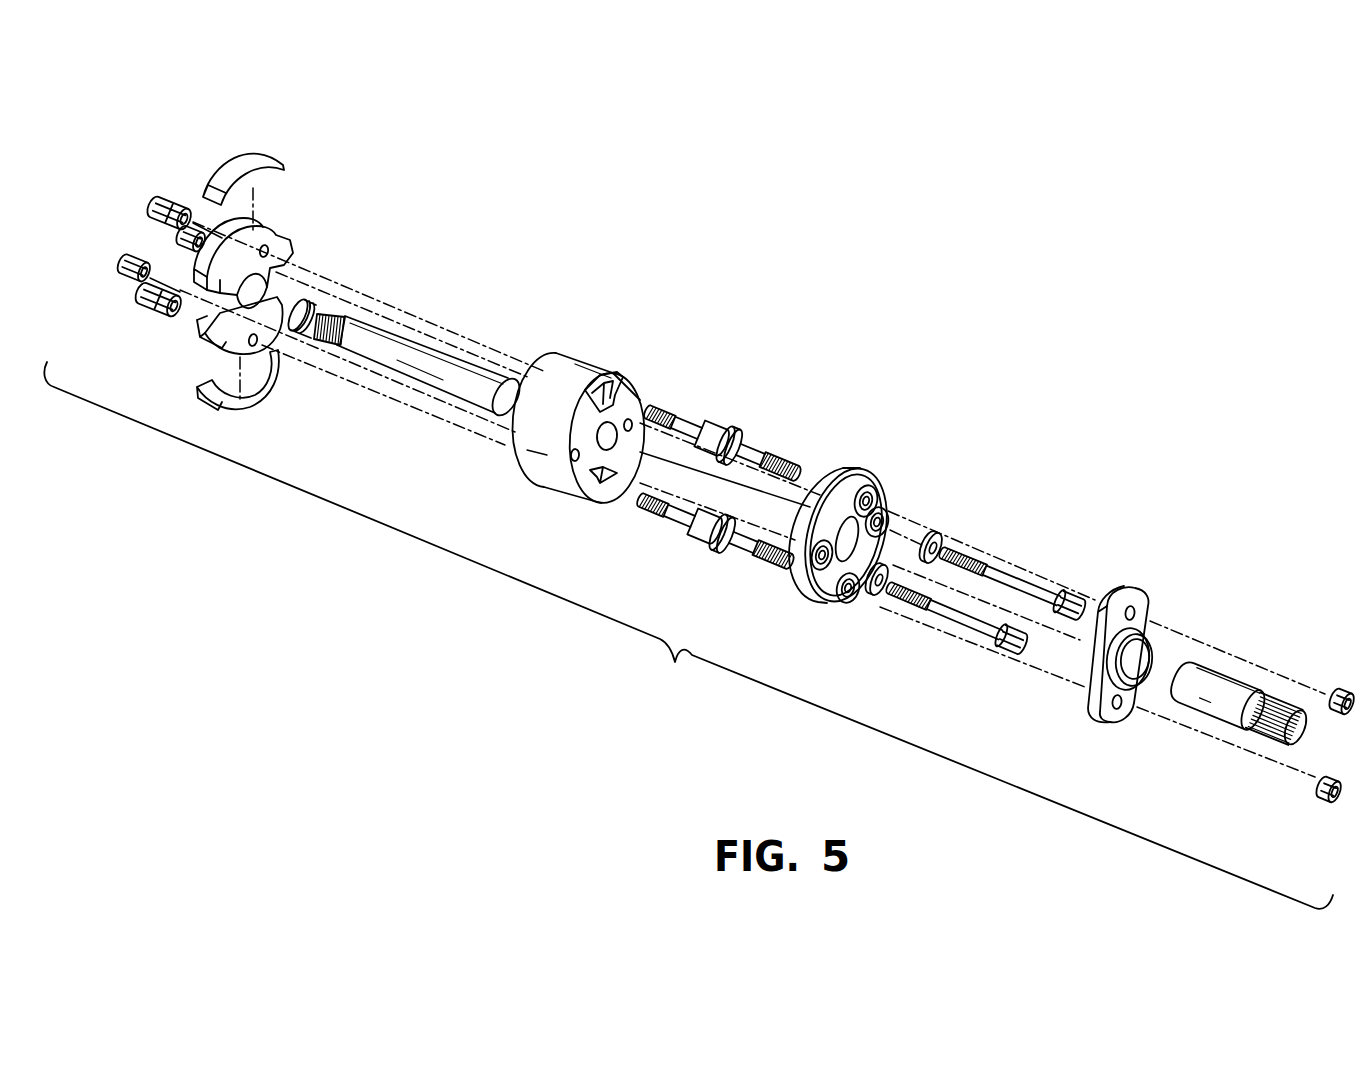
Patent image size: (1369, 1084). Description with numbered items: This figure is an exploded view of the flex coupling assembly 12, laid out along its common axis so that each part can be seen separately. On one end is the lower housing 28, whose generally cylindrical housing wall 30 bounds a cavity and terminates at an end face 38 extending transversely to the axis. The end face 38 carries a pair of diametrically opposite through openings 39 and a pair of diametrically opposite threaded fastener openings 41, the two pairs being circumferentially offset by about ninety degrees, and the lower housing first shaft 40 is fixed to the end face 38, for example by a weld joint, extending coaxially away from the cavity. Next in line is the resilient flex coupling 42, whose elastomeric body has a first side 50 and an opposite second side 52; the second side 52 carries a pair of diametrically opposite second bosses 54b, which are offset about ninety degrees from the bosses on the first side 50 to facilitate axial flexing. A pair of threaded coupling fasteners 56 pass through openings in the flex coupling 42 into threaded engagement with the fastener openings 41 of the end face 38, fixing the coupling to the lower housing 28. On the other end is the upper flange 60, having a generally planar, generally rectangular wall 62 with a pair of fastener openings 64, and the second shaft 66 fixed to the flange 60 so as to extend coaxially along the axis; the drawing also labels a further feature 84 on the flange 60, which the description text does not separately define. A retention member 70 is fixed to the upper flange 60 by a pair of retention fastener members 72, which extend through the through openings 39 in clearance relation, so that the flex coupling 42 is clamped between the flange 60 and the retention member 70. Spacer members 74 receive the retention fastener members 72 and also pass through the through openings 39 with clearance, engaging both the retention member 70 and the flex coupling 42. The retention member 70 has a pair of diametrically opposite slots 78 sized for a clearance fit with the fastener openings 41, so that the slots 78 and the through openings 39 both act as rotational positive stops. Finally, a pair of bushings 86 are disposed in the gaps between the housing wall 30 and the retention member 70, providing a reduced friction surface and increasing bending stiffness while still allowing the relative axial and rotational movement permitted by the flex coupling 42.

The flex coupling assembly 12 is at (688, 635).
The lower housing 28 is at (628, 348).
The housing wall 30 is at (590, 360).
The end face 38 is at (632, 397).
The through openings 39 is at (614, 370).
The lower housing first shaft 40 is at (443, 338).
The fastener openings 41 is at (640, 425).
The resilient flex coupling 42 is at (850, 460).
The first side 50 is at (796, 583).
The second side 52 is at (890, 503).
The second bosses 54b is at (868, 487).
The coupling fasteners 56 is at (1028, 577).
The upper flange 60 is at (1137, 588).
The wall 62 is at (1112, 723).
The fastener openings 64 is at (1133, 612).
The second shaft 66 is at (1230, 658).
The retention member 70 is at (235, 280).
The retention fastener members 72 is at (780, 467).
The spacer members 74 is at (717, 486).
The slots 78 is at (282, 283).
The flange rear face 84 is at (1087, 697).
The bushings 86 is at (247, 157).